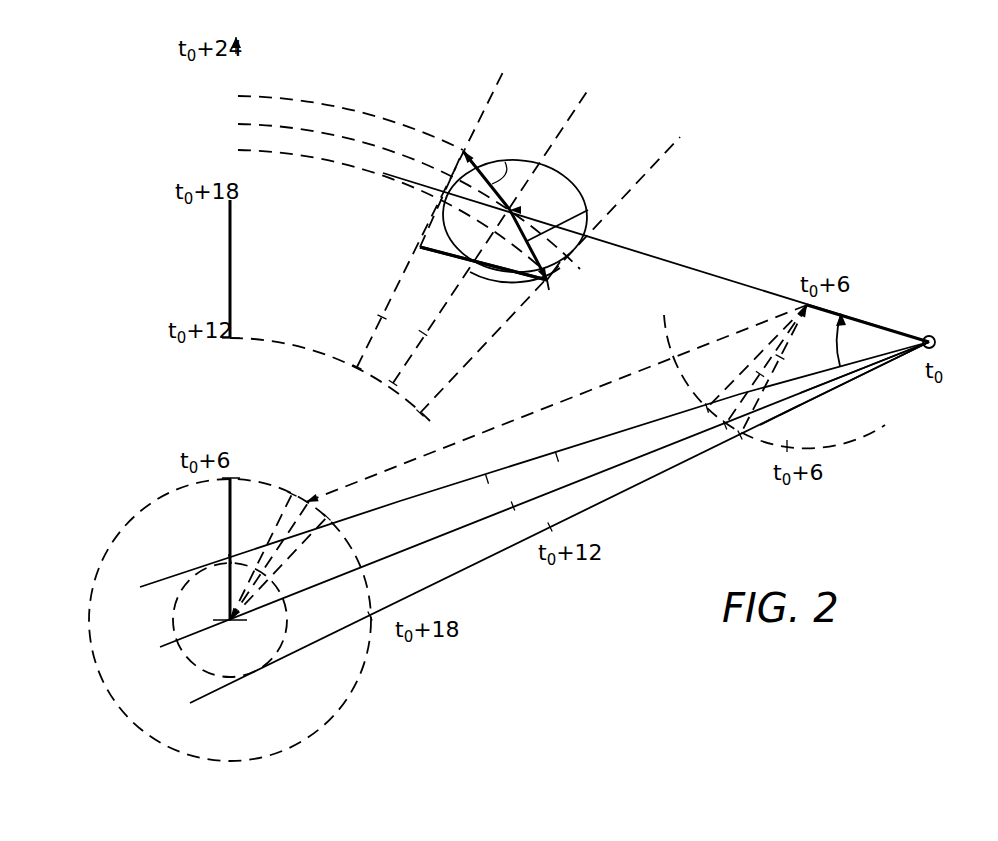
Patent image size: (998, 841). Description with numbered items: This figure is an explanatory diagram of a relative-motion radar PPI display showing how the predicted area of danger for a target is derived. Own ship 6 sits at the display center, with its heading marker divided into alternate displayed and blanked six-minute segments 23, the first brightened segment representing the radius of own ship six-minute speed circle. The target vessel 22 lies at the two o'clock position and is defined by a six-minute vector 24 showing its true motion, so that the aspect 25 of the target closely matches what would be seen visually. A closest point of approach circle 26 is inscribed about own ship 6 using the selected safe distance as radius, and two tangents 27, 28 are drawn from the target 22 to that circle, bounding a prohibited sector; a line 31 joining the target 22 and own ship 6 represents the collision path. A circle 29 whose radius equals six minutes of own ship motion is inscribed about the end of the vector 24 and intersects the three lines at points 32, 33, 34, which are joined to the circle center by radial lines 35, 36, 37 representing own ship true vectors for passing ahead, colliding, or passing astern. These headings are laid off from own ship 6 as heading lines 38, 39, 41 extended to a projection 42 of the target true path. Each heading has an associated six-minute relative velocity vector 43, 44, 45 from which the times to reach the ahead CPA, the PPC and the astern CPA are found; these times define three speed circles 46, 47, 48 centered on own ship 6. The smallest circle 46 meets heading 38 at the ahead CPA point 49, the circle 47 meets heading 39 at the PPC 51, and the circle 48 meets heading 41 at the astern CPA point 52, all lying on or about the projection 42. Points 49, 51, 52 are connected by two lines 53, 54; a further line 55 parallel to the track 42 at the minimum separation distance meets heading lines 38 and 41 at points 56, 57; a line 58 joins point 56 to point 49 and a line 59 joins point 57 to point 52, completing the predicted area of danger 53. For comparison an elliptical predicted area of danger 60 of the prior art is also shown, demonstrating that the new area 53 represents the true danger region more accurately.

The own ship 6 is at (233, 622).
The target vessel 22 is at (936, 339).
The heading marker segment 23 is at (227, 249).
The target 6-minute vector 24 is at (887, 324).
The aspect of the target 25 is at (843, 319).
The closest point of approach circle 26 is at (180, 648).
The tangent 27 is at (534, 464).
The tangent 28 is at (553, 527).
The circle of own ship 6-minute motion 29 is at (878, 428).
The collision path line 31 is at (513, 507).
The point of intersection 32 is at (740, 437).
The point of intersection 33 is at (724, 427).
The point of intersection 34 is at (704, 407).
The radial line 35 is at (781, 358).
The radial line 36 is at (760, 374).
The radial line 37 is at (765, 348).
The own ship heading line 38 is at (488, 343).
The own ship heading line 39 is at (306, 500).
The own ship heading line 41 is at (385, 313).
The projection of the target true path 42 is at (676, 262).
The 6-minute relative velocity vector 43 is at (838, 380).
The 6-minute relative velocity vector 44 is at (808, 394).
The 6-minute relative velocity vector 45 is at (777, 418).
The speed circle 46 is at (307, 158).
The speed circle 47 is at (268, 122).
The speed circle 48 is at (330, 104).
The ahead CPA point 49 is at (556, 267).
The predicted point of collision 51 is at (520, 209).
The astern CPA point 52 is at (466, 152).
The predicted area of danger 53 is at (505, 163).
The connecting line 54 is at (590, 211).
The parallel line 55 is at (520, 278).
The intersection point 56 is at (546, 289).
The intersection point 57 is at (482, 273).
The boundary line 58 is at (553, 284).
The boundary line 59 is at (428, 222).
The elliptical predicted area of danger 60 is at (558, 171).